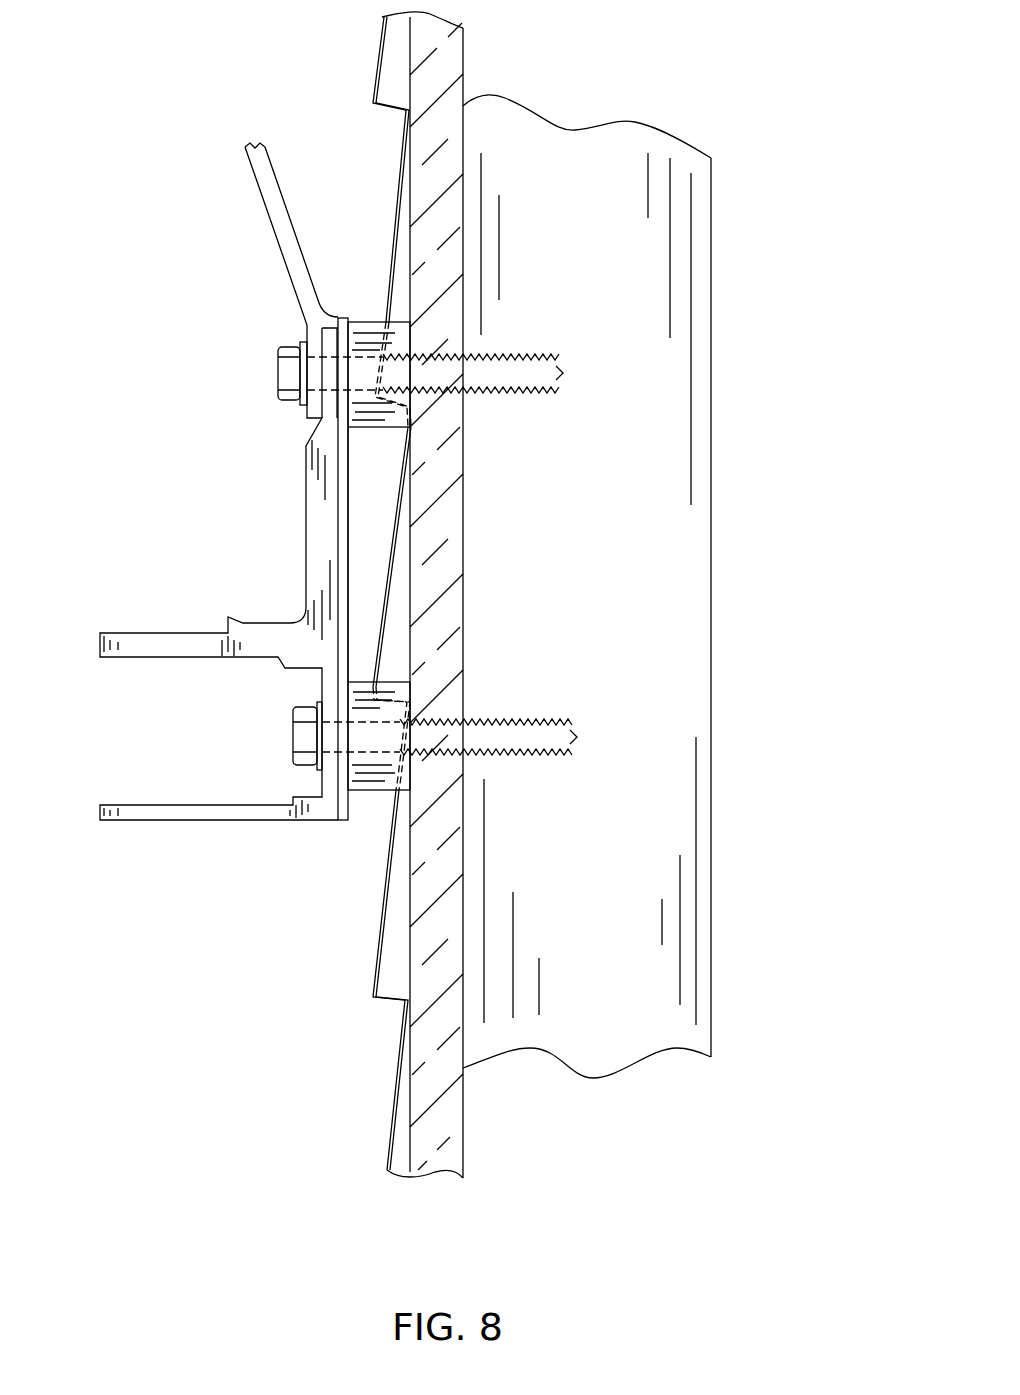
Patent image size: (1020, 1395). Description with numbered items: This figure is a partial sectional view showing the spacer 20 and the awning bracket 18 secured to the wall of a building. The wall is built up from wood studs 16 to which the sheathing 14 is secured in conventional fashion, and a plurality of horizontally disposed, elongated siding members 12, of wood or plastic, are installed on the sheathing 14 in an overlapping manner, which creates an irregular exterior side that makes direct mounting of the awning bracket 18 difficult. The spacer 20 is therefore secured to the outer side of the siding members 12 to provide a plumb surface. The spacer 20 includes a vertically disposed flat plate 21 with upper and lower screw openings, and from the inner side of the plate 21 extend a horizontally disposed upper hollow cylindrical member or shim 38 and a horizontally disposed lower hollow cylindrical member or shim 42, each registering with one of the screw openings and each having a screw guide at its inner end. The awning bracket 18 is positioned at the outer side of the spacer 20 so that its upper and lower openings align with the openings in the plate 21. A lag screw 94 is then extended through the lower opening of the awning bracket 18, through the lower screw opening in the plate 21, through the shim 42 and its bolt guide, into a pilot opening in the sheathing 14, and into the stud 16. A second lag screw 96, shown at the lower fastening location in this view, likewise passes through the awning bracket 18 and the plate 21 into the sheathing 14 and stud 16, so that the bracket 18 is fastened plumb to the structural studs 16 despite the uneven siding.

The siding member 12 is at (393, 193).
The sheathing 14 is at (446, 520).
The stud 16 is at (668, 410).
The awning bracket 18 is at (303, 508).
The spacer 20 is at (365, 630).
The flat plate 21 is at (357, 595).
The upper hollow cylindrical member or shim 38 is at (401, 322).
The lower hollow cylindrical member or shim 42 is at (410, 678).
The lag screw 94 is at (290, 378).
The lower bolt 96 is at (302, 730).